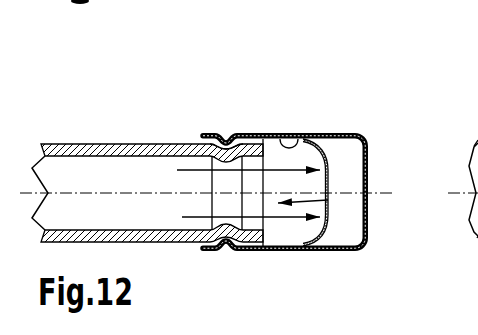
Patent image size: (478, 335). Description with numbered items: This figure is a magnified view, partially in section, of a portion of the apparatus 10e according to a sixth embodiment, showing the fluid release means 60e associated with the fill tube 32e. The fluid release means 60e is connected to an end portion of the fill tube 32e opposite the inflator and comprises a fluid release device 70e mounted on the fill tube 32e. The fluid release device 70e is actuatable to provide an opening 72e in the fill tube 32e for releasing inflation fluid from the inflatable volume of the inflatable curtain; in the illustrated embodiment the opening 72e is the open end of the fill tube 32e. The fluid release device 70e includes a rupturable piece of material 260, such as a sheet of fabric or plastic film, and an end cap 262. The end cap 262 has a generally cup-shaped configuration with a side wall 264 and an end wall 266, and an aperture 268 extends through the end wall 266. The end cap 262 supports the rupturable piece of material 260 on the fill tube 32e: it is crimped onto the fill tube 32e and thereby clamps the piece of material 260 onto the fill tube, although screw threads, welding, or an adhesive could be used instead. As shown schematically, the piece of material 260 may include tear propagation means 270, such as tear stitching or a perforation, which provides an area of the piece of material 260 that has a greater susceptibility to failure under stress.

The apparatus 10e is at (313, 60).
The fill tube 32e is at (91, 150).
The fluid release means 60e is at (352, 64).
The fluid release device 70e is at (388, 102).
The rupturable piece of material 260 is at (278, 135).
The end cap 262 is at (332, 134).
The side wall 264 is at (250, 135).
The end wall 266 is at (366, 150).
The aperture 268 is at (364, 190).
The opening 72e is at (330, 203).
The tear propagation means 270 is at (330, 208).